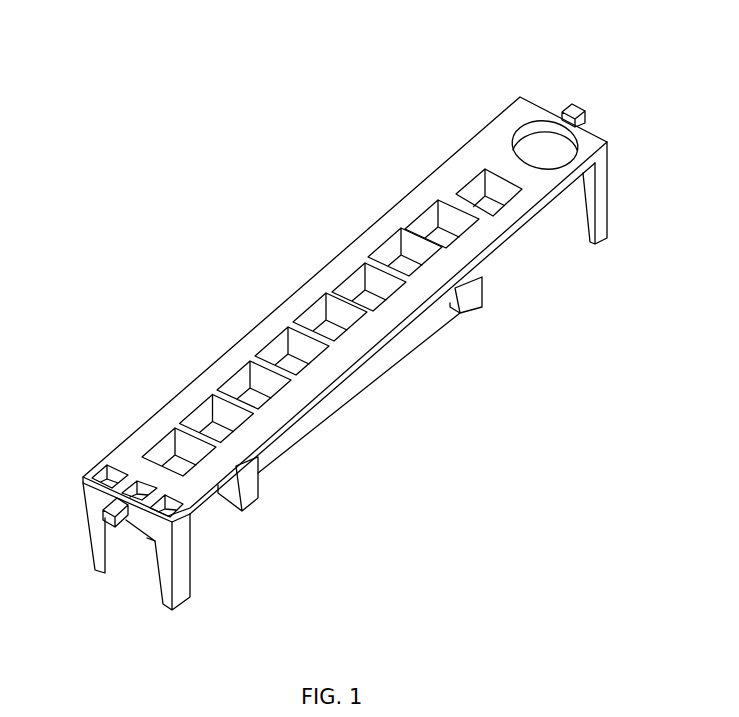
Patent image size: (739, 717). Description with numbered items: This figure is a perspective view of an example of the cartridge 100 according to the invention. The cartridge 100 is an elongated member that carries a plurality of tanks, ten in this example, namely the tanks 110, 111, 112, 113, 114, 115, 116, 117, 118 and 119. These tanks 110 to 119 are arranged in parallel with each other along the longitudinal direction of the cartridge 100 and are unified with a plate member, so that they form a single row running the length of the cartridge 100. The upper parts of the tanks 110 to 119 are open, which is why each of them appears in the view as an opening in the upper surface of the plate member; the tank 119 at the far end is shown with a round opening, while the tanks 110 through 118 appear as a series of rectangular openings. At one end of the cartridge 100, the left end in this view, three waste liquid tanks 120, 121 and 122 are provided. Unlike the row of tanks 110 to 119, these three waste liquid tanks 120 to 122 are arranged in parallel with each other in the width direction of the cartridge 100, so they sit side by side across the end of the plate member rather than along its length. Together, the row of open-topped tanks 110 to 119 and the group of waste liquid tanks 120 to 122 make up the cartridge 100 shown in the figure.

The cartridge 100 is at (202, 74).
The tank 110 is at (169, 458).
The tank 111 is at (206, 424).
The tank 112 is at (244, 391).
The tank 113 is at (282, 357).
The tank 114 is at (320, 323).
The tank 115 is at (359, 293).
The tank 116 is at (395, 258).
The tank 117 is at (432, 230).
The tank 118 is at (477, 198).
The tank 119 is at (531, 147).
The waste liquid tank 120 is at (110, 473).
The waste liquid tank 121 is at (108, 488).
The waste liquid tank 122 is at (170, 520).